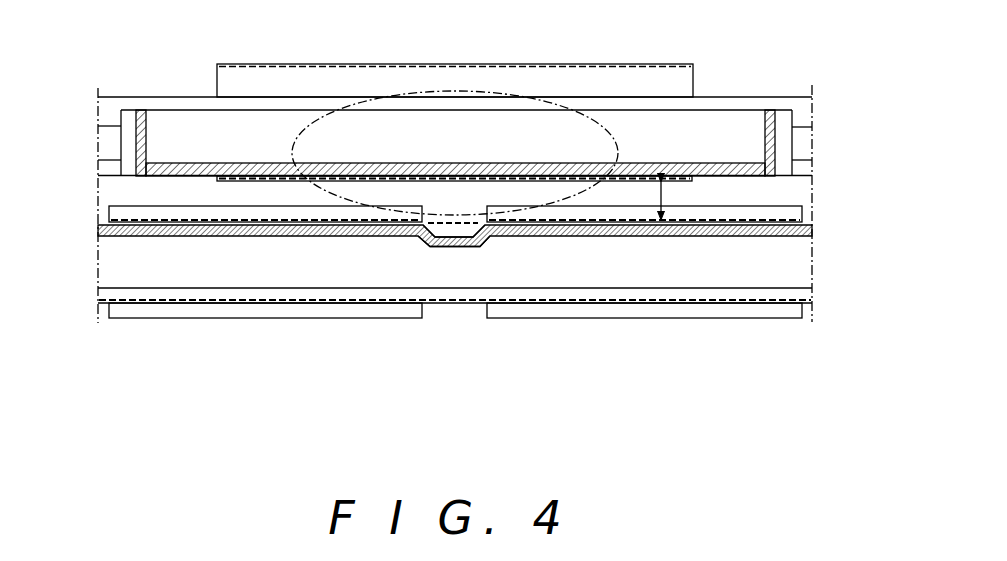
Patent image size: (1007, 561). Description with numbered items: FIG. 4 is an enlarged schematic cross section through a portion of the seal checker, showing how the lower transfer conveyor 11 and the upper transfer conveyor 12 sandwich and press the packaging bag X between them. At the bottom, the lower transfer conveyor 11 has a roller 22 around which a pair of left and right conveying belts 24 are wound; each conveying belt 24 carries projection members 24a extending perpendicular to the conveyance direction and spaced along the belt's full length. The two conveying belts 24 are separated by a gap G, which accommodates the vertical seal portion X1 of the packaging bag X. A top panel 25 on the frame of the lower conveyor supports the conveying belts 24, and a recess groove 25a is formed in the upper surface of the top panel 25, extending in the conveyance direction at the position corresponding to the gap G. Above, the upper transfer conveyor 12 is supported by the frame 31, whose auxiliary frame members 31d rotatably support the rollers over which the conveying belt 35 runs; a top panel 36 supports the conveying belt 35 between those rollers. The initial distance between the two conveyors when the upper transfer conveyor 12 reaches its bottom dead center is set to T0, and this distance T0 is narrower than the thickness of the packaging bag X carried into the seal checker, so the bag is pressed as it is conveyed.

The lower transfer conveyor 11 is at (737, 332).
The upper transfer conveyor 12 is at (737, 83).
The roller 22 is at (103, 303).
The conveying belt 24 is at (237, 303).
The projection member 24a is at (203, 215).
The top panel 25 is at (710, 238).
The recess groove 25a is at (437, 243).
The frame 31 is at (185, 97).
The auxiliary frame member 31d is at (128, 118).
The conveying belt 35 is at (218, 178).
The top panel 36 is at (725, 168).
The packaging bag X is at (530, 92).
The vertical seal portion X1 is at (467, 247).
The gap G is at (433, 210).
The distance T0 is at (677, 201).